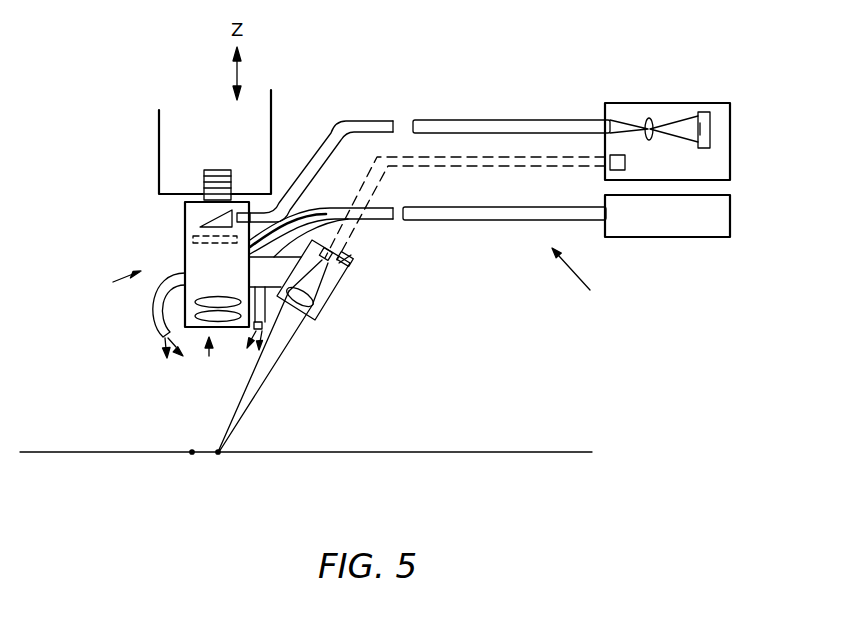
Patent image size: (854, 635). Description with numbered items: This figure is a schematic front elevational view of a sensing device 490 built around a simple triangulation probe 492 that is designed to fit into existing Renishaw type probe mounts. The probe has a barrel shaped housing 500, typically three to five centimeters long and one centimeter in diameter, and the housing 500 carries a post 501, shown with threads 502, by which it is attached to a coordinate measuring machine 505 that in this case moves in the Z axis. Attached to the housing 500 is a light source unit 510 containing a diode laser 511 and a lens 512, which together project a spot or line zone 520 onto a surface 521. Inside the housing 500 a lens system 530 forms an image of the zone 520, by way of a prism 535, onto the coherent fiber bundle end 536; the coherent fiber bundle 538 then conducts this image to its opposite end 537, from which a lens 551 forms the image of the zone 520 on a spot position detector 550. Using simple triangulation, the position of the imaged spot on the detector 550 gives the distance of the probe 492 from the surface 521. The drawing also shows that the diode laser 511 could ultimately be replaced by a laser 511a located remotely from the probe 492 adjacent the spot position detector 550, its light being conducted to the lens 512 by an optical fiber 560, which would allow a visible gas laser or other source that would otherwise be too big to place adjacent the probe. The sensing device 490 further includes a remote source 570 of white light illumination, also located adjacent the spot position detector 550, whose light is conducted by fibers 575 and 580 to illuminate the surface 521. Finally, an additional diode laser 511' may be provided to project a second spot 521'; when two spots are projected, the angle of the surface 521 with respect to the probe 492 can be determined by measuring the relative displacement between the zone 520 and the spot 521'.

The sensing device 490 is at (590, 275).
The triangulation probe 492 is at (106, 283).
The barrel shaped housing 500 is at (184, 268).
The post 501 is at (204, 184).
The threads 502 is at (231, 182).
The coordinate measuring machine 505 is at (236, 139).
The light source unit 510 is at (341, 280).
The diode laser 511 is at (357, 244).
The additional diode laser 511' is at (385, 258).
The laser 511a is at (626, 163).
The lens 512 is at (318, 301).
The spot or line zone 520 is at (219, 450).
The surface 521 is at (306, 470).
The spot 521' is at (183, 469).
The lens system 530 is at (210, 358).
The prism 535 is at (204, 226).
The coherent fiber bundle end 536 is at (282, 206).
The opposite end 537 is at (608, 120).
The coherent fiber bundle 538 is at (466, 120).
The spot position detector 550 is at (710, 132).
The lens 551 is at (668, 90).
The optical fiber 560 is at (567, 169).
The remote source of white light illumination 570 is at (684, 234).
The fiber 575 is at (156, 308).
The fiber 580 is at (264, 321).